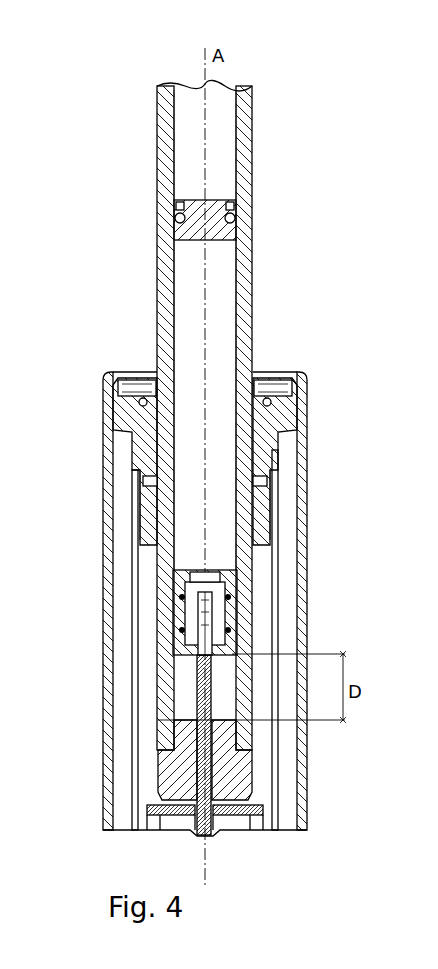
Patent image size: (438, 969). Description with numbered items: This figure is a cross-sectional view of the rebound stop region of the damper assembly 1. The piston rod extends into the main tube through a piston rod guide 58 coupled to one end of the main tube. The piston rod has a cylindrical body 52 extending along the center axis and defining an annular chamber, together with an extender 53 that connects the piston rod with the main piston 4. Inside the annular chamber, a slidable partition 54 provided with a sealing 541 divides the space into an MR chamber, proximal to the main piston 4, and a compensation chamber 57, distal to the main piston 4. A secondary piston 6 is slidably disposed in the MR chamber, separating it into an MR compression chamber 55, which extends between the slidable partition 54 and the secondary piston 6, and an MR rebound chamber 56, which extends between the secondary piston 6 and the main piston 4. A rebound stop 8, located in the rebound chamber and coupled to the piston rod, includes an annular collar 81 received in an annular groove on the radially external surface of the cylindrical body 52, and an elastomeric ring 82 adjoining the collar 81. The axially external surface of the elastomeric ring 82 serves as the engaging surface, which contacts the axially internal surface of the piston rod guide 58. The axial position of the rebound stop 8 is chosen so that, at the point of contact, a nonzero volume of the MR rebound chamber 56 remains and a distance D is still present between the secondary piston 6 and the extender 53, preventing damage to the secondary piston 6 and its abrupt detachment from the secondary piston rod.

The damper assembly 1 is at (333, 428).
The main piston 4 is at (262, 803).
The secondary piston 6 is at (262, 618).
The rebound stop 8 is at (283, 478).
The cylindrical body 52 is at (250, 286).
The extender 53 is at (237, 762).
The slidable partition 54 is at (253, 210).
The sealing 541 is at (238, 222).
The MR compression chamber 55 is at (230, 326).
The MR rebound chamber 56 is at (228, 673).
The compensation chamber 57 is at (213, 164).
The piston rod guide 58 is at (285, 392).
The annular collar 81 is at (278, 503).
The elastomeric ring 82 is at (270, 482).